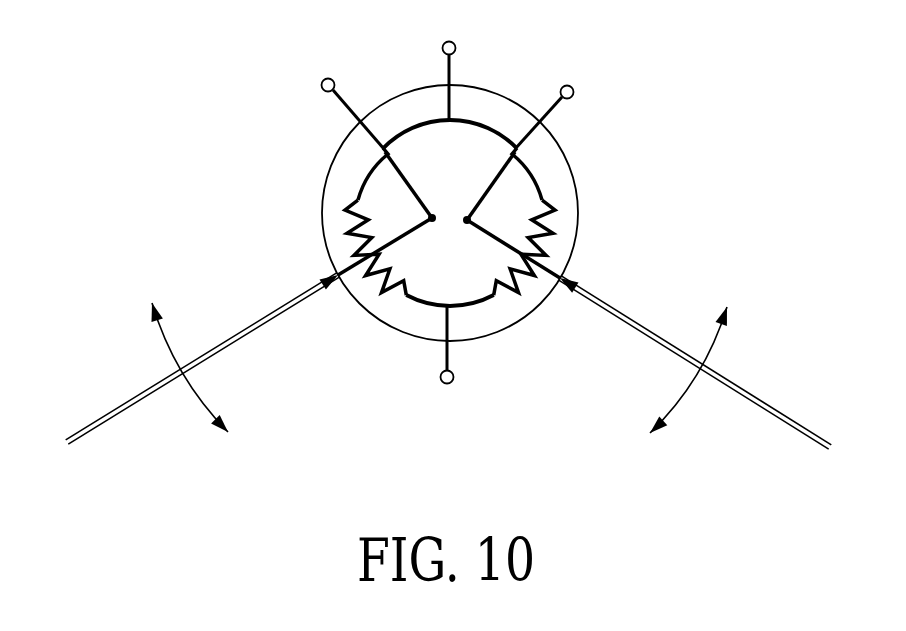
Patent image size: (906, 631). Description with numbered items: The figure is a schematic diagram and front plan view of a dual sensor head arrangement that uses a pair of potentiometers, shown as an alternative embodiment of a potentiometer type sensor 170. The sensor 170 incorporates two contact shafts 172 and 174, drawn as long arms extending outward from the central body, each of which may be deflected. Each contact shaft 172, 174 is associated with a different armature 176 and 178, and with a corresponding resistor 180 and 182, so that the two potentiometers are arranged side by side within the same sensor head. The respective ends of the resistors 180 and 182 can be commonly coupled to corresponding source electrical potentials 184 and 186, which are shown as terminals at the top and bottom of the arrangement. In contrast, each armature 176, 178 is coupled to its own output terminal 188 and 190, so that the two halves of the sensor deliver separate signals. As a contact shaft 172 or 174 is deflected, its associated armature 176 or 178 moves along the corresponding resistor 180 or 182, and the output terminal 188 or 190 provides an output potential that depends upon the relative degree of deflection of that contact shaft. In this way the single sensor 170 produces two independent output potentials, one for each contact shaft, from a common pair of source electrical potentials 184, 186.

The potentiometer type sensor 170 is at (706, 110).
The contact shaft 172 is at (120, 407).
The contact shaft 174 is at (740, 386).
The armature 176 is at (397, 238).
The armature 178 is at (497, 237).
The resistor 180 is at (362, 296).
The resistor 182 is at (537, 297).
The source electrical potential 184 is at (450, 72).
The source electrical potential 186 is at (450, 357).
The output terminal 188 is at (342, 106).
The output terminal 190 is at (557, 116).